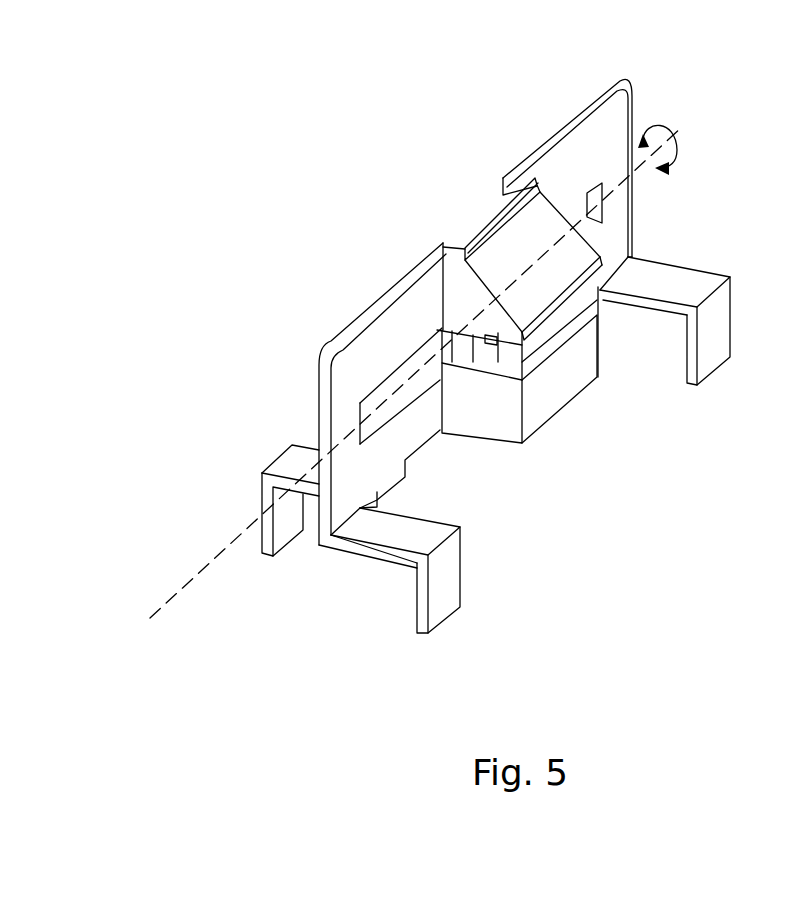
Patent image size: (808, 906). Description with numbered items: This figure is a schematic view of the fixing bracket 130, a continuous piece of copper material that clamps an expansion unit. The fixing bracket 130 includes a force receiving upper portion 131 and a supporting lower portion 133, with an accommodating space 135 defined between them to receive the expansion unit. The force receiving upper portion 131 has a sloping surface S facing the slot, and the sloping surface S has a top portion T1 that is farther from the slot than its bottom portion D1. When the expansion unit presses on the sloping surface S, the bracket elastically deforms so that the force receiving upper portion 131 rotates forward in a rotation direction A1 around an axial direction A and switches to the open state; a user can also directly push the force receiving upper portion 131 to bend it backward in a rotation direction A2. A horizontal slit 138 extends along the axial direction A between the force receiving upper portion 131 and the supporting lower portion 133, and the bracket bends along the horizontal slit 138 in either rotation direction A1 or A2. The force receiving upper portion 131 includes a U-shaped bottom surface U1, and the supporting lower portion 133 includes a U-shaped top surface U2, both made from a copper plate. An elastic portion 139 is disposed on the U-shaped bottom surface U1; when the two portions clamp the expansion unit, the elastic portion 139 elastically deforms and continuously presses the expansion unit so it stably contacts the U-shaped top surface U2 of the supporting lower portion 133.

The fixing bracket 130 is at (295, 79).
The force receiving upper portion 131 is at (443, 245).
The supporting lower portion 133 is at (537, 410).
The accommodating space 135 is at (606, 289).
The horizontal slit 138 is at (393, 360).
The elastic portion 139 is at (508, 333).
The sloping surface S is at (551, 200).
The top portion T1 is at (492, 222).
The U-shaped bottom surface U1 is at (467, 350).
The U-shaped top surface U2 is at (518, 327).
The bottom portion D1 is at (563, 320).
The axial direction A is at (411, 371).
The rotation direction A1 is at (681, 185).
The rotation direction A2 is at (657, 129).